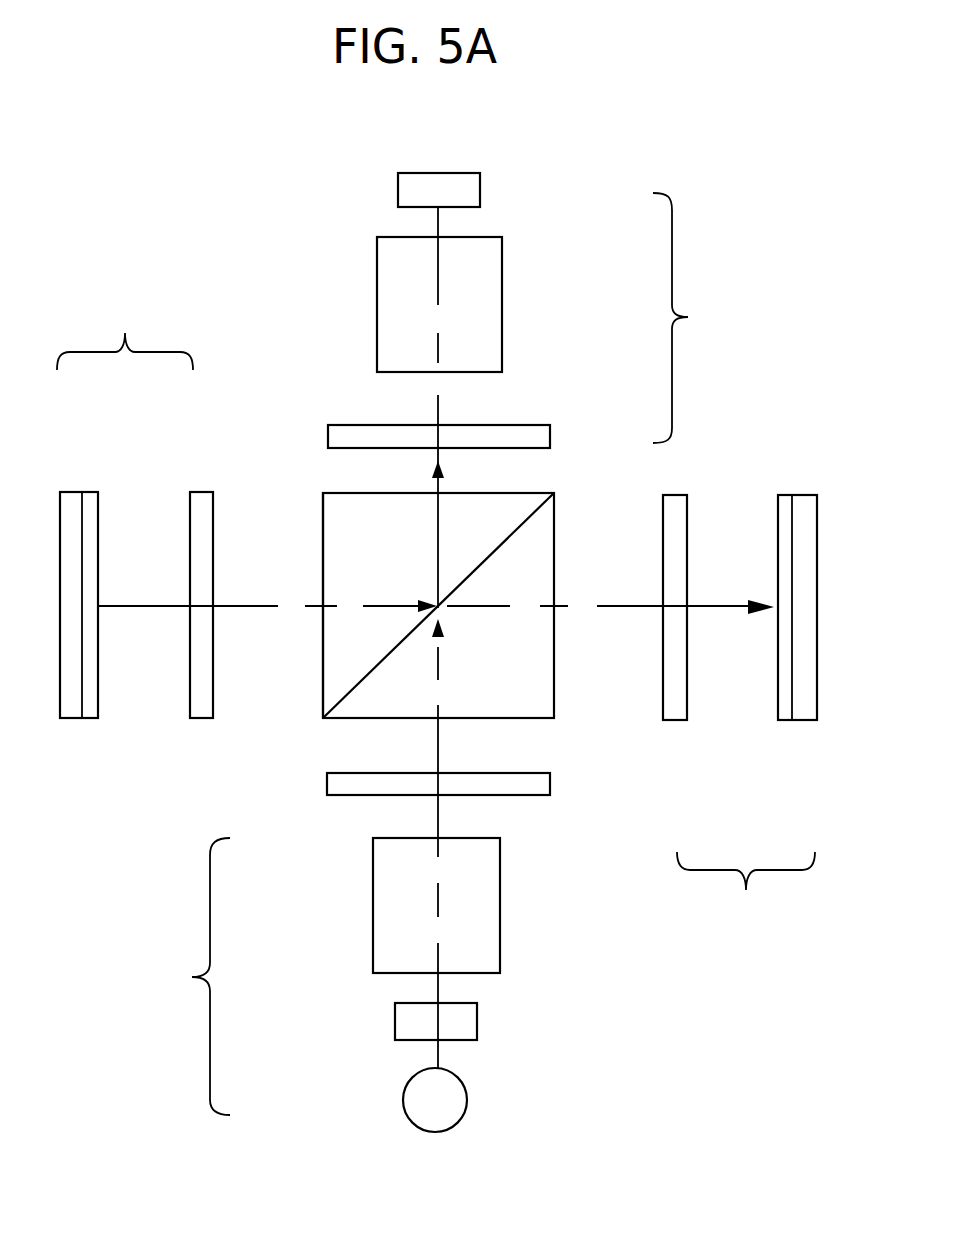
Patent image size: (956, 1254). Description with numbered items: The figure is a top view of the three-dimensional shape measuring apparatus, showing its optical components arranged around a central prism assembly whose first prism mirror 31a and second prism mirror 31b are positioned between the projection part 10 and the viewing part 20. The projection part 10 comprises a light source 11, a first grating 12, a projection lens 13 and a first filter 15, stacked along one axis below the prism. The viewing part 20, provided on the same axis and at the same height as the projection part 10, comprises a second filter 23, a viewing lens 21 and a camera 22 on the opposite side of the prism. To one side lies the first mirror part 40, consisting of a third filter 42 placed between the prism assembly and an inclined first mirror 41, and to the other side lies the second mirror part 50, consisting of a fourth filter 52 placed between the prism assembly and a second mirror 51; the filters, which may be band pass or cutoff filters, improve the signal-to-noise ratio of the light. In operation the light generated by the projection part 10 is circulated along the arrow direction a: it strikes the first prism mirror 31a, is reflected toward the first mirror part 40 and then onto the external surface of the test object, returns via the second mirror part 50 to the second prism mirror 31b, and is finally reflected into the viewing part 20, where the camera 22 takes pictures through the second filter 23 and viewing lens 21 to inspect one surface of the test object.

The projection part 10 is at (184, 976).
The light source 11 is at (410, 1097).
The first grating 12 is at (402, 1027).
The projection lens 13 is at (373, 915).
The first filter 15 is at (327, 796).
The viewing part 20 is at (699, 318).
The viewing lens 21 is at (503, 316).
The camera 22 is at (481, 194).
The second filter 23 is at (551, 436).
The first prism mirror 31a is at (535, 702).
The second prism mirror 31b is at (355, 500).
The first mirror part 40 is at (746, 893).
The first mirror 41 is at (808, 707).
The third filter 42 is at (672, 707).
The second mirror part 50 is at (125, 328).
The second mirror 51 is at (72, 493).
The fourth filter 52 is at (203, 493).
The arrow direction a is at (441, 463).